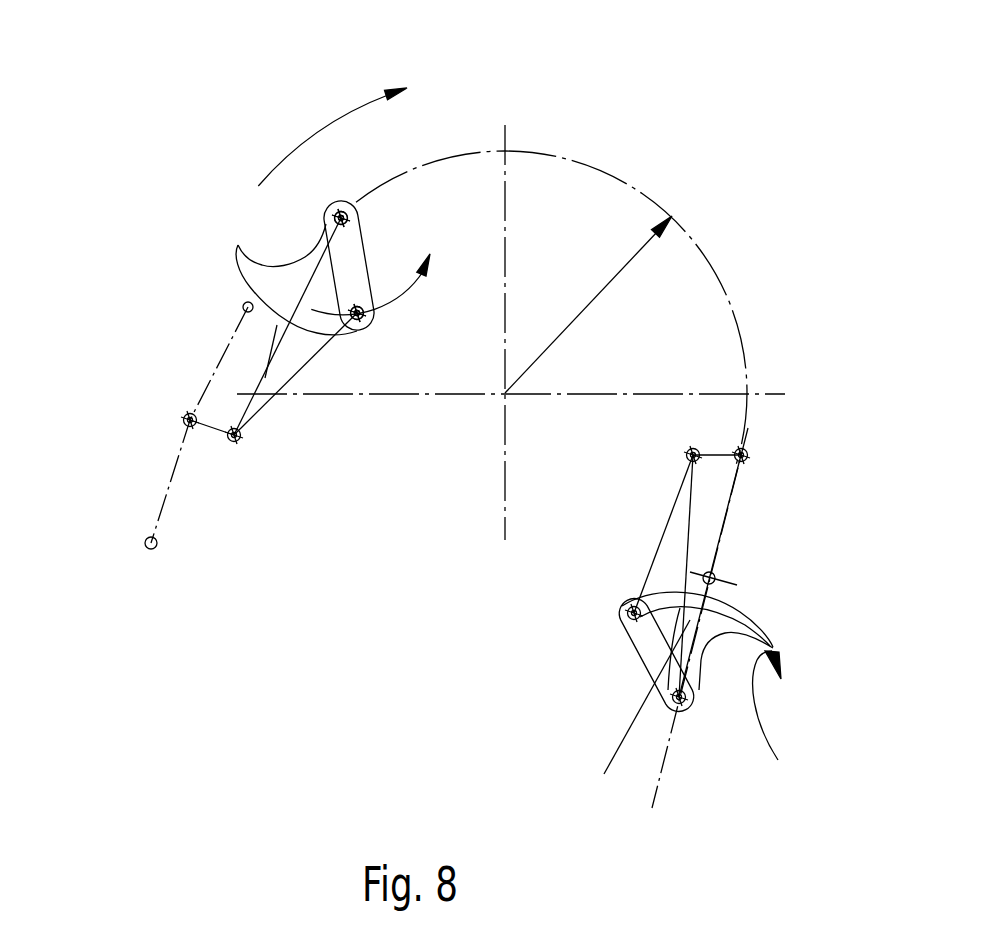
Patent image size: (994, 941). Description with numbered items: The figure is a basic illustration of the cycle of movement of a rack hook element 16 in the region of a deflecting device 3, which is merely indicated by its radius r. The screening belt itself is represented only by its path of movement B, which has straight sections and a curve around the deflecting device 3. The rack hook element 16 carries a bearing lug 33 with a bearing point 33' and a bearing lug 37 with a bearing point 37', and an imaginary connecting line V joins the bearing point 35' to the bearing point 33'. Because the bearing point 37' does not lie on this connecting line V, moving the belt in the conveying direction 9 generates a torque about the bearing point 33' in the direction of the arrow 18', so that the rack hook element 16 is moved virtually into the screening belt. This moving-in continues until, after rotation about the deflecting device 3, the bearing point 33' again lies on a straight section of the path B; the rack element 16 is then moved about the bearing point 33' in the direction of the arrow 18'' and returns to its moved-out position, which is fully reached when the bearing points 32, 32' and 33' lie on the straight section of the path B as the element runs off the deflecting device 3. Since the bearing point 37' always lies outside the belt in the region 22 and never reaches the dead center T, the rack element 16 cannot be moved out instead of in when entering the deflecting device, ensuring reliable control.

The upper deflecting device 3 is at (683, 179).
The conveying direction 9 is at (320, 120).
The rack hook element 16 is at (236, 245).
The arrow indicating moving-in direction 18' is at (401, 284).
The arrow indicating moving-out direction 18'' is at (781, 717).
The region outside the screening belt 22 is at (422, 607).
The bearing point 32 is at (162, 435).
The bearing point 32' is at (748, 618).
The bearing lug 33 is at (304, 289).
The bearing point 33' is at (539, 485).
The bearing point 35' is at (483, 561).
The bearing lug 37 is at (312, 369).
The bearing point 37' is at (520, 507).
The path of movement B is at (210, 380).
The connecting line V is at (317, 277).
The dead center T is at (636, 710).
The radius r is at (588, 304).